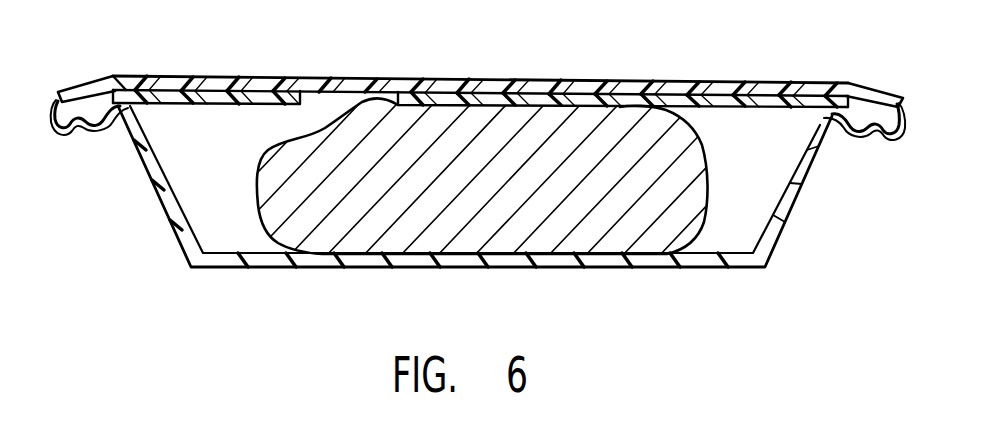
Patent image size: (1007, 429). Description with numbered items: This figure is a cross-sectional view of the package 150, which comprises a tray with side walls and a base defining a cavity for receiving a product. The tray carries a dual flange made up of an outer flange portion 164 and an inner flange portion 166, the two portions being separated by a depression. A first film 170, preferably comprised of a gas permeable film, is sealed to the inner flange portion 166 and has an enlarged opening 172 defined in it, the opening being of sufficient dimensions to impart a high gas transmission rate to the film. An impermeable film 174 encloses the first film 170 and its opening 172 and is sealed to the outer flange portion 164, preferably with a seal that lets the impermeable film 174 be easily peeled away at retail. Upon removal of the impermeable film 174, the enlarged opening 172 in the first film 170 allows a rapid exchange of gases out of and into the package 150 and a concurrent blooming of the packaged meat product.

The package 150 is at (847, 191).
The outer flange portion 164 is at (908, 103).
The inner flange portion 166 is at (120, 127).
The first film 170 is at (480, 75).
The enlarged opening 172 is at (330, 108).
The impermeable film 174 is at (495, 88).